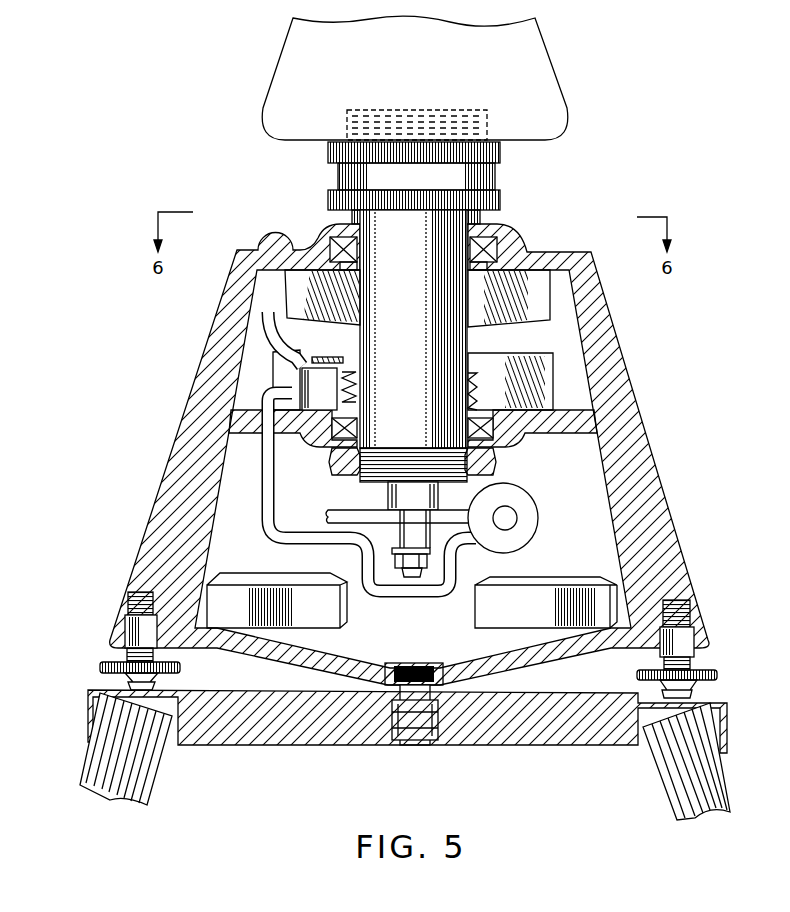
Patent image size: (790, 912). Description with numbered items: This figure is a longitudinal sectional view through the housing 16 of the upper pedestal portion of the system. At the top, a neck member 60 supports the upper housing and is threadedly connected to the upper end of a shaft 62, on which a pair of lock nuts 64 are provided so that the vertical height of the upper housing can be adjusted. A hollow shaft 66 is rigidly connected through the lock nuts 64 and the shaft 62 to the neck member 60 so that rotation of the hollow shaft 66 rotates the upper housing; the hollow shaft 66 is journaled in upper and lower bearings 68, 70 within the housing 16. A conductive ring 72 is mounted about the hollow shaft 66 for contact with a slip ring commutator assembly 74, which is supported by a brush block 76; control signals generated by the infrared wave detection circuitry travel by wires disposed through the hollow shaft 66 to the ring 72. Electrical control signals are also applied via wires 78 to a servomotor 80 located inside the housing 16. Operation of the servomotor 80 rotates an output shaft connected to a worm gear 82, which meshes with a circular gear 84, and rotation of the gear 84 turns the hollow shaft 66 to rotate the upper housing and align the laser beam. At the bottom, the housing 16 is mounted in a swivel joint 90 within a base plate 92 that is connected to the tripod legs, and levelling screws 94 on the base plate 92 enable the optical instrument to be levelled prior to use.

The housing 16 is at (180, 473).
The neck member 60 is at (535, 70).
The shaft 62 is at (350, 123).
The lock nuts 64 is at (500, 196).
The hollow shaft 66 is at (411, 327).
The bearings 68 is at (336, 237).
The bearings 70 is at (333, 440).
The conductive ring 72 is at (470, 396).
The slip ring commutator assembly 74 is at (347, 368).
The brush block 76 is at (319, 389).
The wires 78 is at (263, 528).
The servomotor 80 is at (530, 545).
The worm gear 82 is at (517, 512).
The circular gear 84 is at (364, 517).
The swivel joint 90 is at (433, 748).
The base plate 92 is at (263, 733).
The levelling screws 94 is at (100, 666).